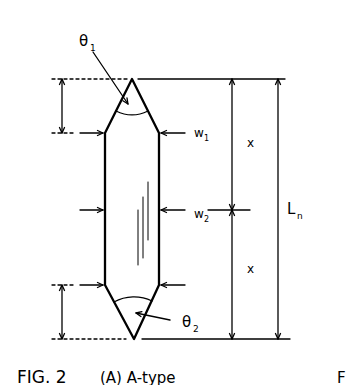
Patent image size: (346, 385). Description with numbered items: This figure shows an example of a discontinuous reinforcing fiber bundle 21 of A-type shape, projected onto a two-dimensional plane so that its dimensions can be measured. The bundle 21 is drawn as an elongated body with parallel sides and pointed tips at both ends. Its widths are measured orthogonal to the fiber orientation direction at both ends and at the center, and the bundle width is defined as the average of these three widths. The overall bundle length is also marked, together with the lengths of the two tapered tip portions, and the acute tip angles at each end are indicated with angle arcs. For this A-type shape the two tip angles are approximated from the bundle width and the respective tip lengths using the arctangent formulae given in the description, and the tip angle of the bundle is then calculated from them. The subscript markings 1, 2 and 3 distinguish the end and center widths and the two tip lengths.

The discontinuous reinforcing fiber bundle 21 is at (133, 135).
The tip length l1 1 is at (54, 106).
The tip length l2 2 is at (54, 312).
The width w3 3 is at (144, 288).